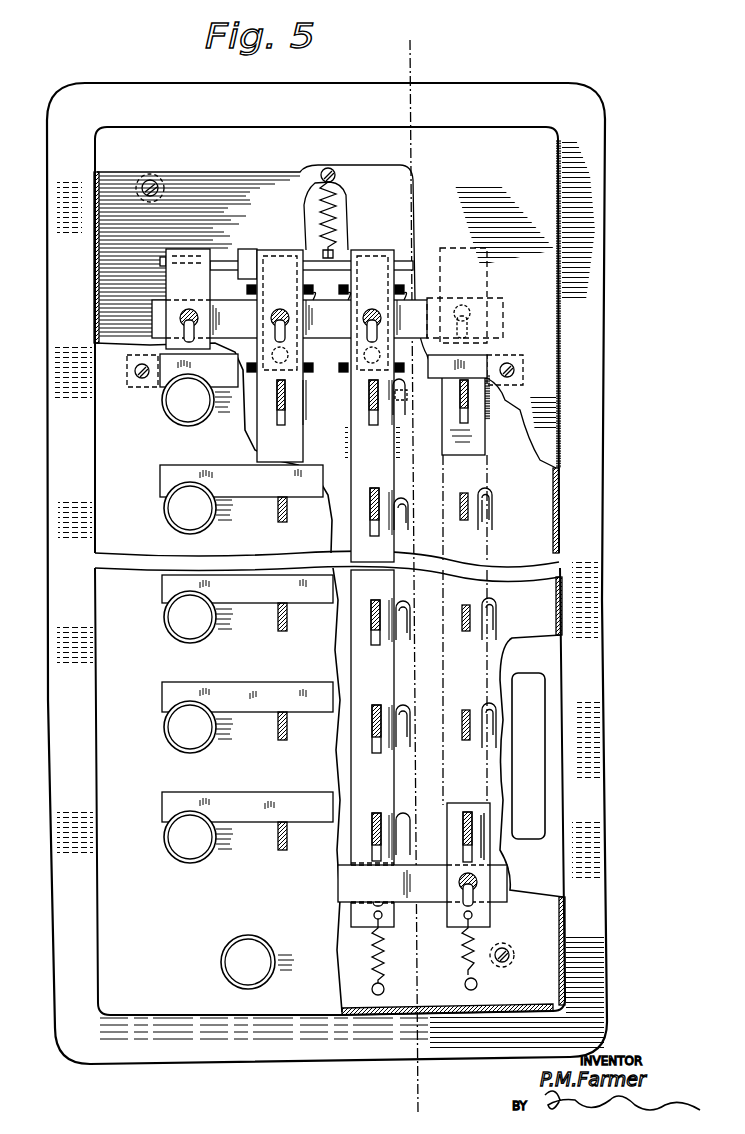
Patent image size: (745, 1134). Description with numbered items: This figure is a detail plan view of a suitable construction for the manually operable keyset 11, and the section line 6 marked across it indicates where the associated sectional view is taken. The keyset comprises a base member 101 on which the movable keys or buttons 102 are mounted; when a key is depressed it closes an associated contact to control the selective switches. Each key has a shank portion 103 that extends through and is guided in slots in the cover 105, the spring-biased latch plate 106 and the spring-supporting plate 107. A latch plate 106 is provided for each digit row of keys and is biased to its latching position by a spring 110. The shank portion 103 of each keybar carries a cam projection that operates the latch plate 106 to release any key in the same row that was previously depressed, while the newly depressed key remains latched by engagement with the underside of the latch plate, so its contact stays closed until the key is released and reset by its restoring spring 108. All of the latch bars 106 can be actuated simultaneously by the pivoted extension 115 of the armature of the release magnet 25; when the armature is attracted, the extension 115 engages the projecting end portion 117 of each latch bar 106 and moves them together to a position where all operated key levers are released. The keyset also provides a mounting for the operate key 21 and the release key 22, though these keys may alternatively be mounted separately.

The section line 6— 6 is at (400, 55).
The keyset 11 is at (46, 302).
The base member 101 is at (600, 276).
The cover 105 is at (108, 383).
The spring-supporting plate 107 is at (369, 160).
The projecting end portion 117 is at (193, 258).
The pivoted extension 115 is at (246, 263).
The release magnet 25 is at (312, 300).
The latch plate 106 is at (365, 447).
The restoring spring 108 is at (482, 508).
The keys or buttons 102 is at (183, 490).
The shank portion 103 is at (289, 630).
The operate key 21 is at (535, 793).
The release key 22 is at (240, 950).
The spring 110 is at (467, 988).